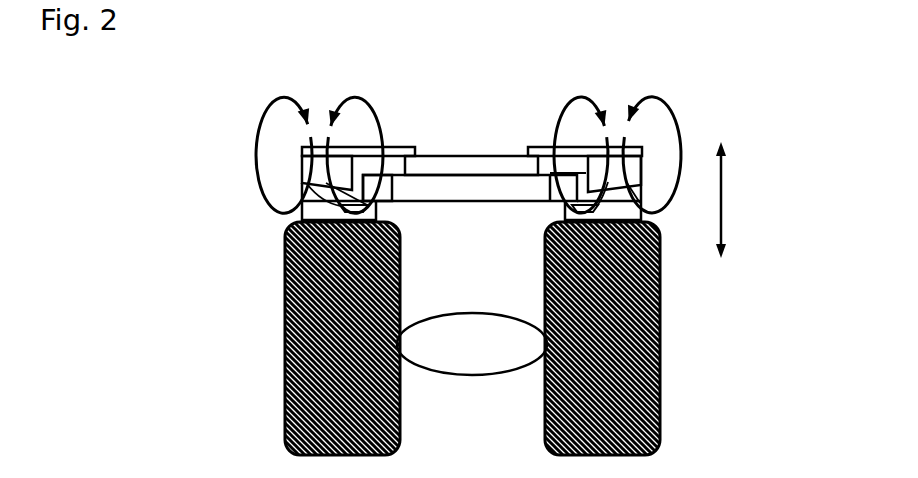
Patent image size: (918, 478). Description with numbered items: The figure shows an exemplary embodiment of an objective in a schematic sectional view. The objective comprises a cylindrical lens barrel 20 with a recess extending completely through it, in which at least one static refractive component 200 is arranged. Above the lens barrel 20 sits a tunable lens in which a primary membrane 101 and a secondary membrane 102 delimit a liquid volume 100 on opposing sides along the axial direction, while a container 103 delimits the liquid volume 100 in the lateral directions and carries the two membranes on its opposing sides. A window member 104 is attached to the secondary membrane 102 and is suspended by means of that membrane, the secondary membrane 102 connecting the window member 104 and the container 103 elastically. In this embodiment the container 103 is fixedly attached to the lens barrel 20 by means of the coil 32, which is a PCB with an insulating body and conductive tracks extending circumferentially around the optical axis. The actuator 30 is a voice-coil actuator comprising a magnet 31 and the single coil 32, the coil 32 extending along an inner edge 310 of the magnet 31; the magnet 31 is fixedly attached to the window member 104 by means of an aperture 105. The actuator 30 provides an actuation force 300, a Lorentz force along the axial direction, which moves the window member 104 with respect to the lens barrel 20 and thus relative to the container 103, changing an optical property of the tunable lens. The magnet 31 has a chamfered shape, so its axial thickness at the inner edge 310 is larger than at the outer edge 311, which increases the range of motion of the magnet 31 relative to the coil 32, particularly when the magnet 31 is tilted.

The lens barrel 20 is at (308, 253).
The static refractive component 200 is at (468, 348).
The actuation force 300 is at (722, 203).
The actuator 30 is at (265, 186).
The magnet 31 is at (322, 177).
The coil 32 is at (335, 200).
The liquid volume 100 is at (470, 164).
The primary membrane 101 is at (440, 190).
The secondary membrane 102 is at (400, 176).
The container 103 is at (383, 193).
The window member 104 is at (427, 167).
The aperture 105 is at (620, 148).
The inner edge 310 is at (586, 173).
The outer edge 311 is at (642, 172).